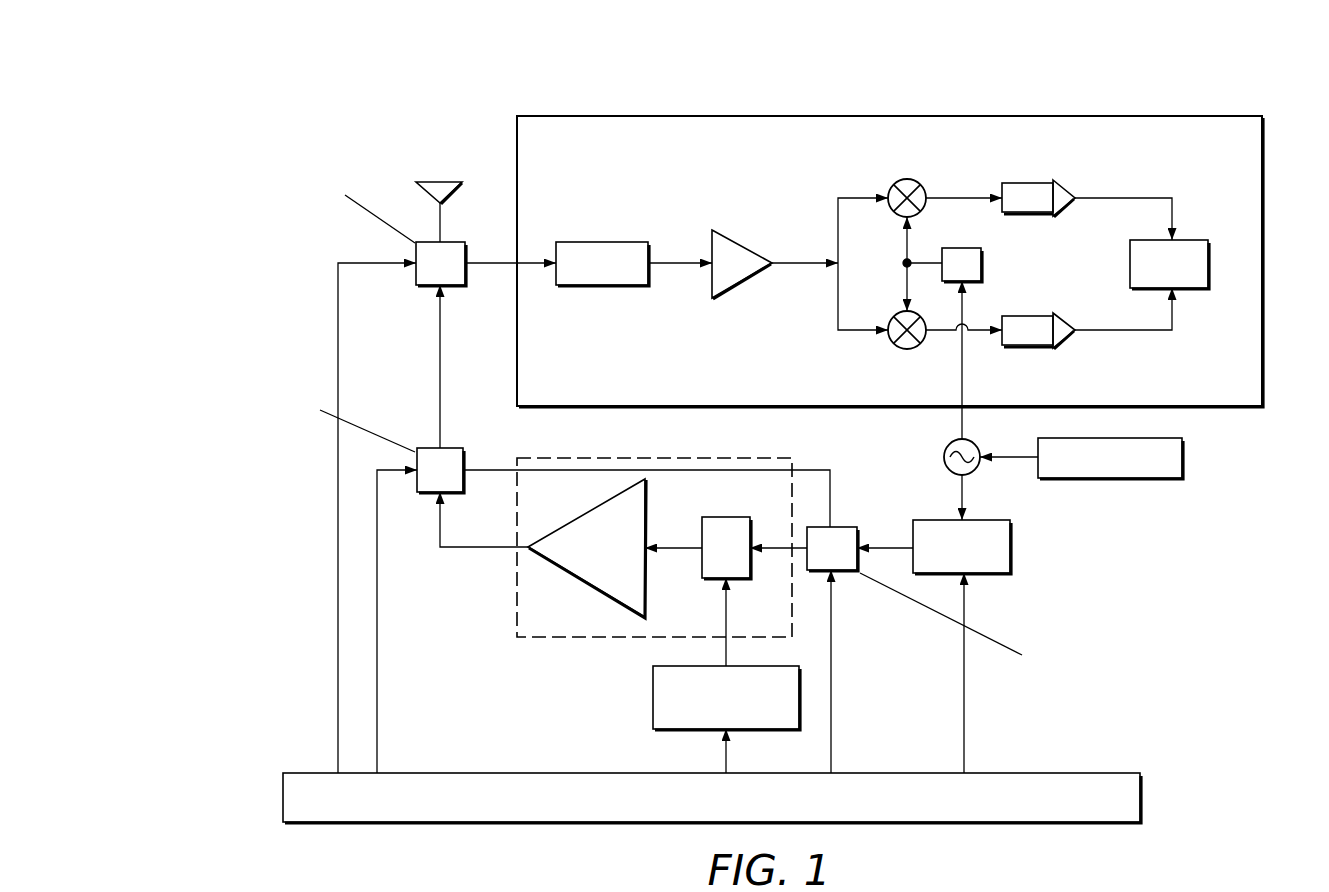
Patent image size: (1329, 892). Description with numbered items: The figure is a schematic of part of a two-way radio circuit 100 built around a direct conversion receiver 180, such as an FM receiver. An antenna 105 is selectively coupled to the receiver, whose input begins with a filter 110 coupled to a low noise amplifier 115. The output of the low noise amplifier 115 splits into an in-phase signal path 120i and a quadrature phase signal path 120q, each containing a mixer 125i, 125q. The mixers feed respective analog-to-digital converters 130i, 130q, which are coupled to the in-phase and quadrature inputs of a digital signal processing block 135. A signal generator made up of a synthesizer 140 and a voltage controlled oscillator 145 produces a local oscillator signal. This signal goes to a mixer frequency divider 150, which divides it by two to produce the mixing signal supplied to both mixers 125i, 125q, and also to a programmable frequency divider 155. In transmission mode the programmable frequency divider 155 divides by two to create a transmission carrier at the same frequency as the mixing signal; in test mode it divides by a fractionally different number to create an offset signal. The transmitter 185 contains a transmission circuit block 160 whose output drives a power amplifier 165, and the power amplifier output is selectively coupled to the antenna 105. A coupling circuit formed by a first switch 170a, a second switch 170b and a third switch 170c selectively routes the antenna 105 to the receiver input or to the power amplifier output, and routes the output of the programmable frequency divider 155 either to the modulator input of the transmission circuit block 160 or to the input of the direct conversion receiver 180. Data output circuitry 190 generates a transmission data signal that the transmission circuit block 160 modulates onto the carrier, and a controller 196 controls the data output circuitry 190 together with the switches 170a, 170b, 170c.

The two-way radio circuit 100 is at (1316, 72).
The antenna 105 is at (452, 182).
The filter 110 is at (630, 242).
The low noise amplifier 115 is at (743, 245).
The in-phase signal path 120i is at (777, 192).
The quadrature phase signal path 120q is at (777, 320).
The mixer 125i is at (907, 179).
The mixer 125q is at (907, 349).
The analog-to-digital converter 130i is at (1040, 183).
The analog-to-digital converter 130q is at (1040, 316).
The digital signal processing block 135 is at (1197, 240).
The synthesizer 140 is at (1165, 438).
The voltage controlled oscillator 145 is at (973, 444).
The mixer frequency divider 150 is at (967, 248).
The programmable frequency divider 155 is at (995, 520).
The transmission circuit block 160 is at (735, 517).
The power amplifier 165 is at (570, 520).
The first switch 170a is at (445, 242).
The second switch 170b is at (445, 448).
The third switch 170c is at (843, 527).
The direct conversion receiver 180 is at (1243, 116).
The transmitter 185 is at (775, 458).
The data output circuitry 190 is at (668, 666).
The controller 196 is at (1125, 773).